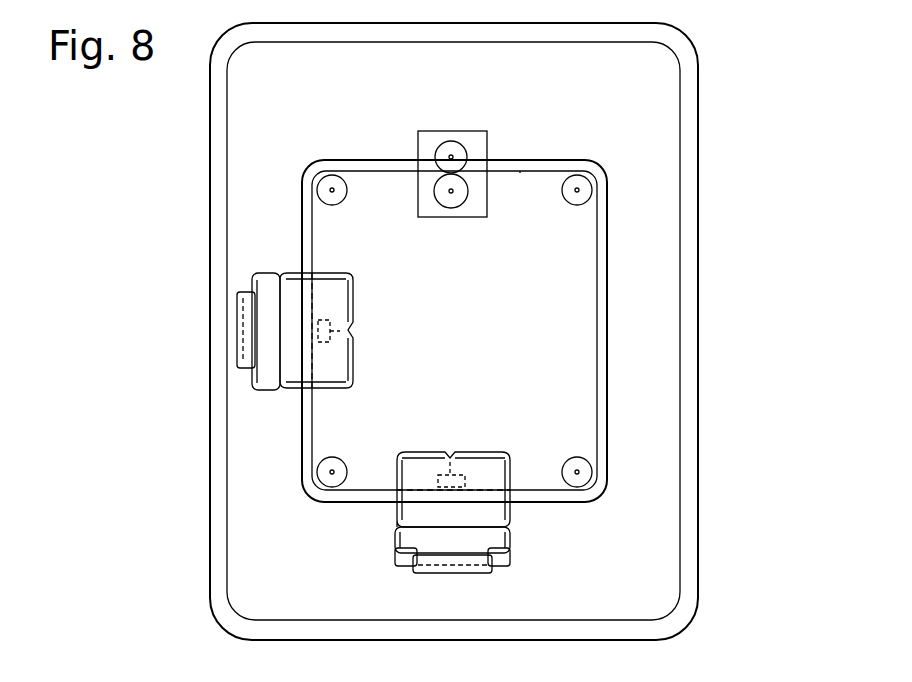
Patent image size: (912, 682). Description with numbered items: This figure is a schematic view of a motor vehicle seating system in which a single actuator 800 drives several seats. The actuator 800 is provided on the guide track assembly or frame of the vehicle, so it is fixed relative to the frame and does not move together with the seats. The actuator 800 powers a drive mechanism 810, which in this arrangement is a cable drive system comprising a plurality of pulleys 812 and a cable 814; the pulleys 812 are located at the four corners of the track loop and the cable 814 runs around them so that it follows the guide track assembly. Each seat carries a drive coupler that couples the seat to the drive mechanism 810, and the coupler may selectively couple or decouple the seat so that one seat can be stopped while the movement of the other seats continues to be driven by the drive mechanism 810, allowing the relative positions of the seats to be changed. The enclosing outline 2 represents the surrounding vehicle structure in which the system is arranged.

The housing 2 is at (733, 67).
The actuator 800 is at (474, 212).
The drive mechanism 810 is at (348, 214).
The pulley 812 is at (330, 182).
The cable 814 is at (520, 175).